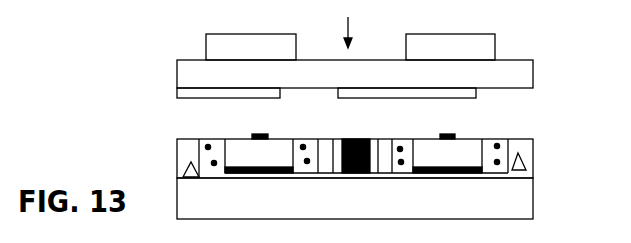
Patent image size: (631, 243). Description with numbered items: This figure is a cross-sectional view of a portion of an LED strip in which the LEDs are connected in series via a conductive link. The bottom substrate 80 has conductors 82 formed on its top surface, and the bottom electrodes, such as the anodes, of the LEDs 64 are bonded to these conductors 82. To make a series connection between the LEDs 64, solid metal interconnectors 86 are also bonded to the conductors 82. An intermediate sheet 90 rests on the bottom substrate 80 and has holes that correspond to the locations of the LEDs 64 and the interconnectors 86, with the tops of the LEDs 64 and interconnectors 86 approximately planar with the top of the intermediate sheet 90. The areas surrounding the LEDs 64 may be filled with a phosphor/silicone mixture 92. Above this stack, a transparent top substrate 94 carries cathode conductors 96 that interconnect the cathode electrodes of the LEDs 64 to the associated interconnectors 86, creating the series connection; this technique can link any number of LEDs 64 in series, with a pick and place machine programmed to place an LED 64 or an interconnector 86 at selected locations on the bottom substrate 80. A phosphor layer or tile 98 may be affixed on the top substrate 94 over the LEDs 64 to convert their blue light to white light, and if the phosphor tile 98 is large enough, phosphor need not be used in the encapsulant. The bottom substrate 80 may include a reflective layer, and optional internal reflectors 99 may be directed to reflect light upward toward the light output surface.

The phosphor layer or tile 98 is at (495, 50).
The transparent top substrate 94 is at (523, 72).
The cathode conductors 96 is at (477, 93).
The intermediate sheet 90 is at (523, 144).
The phosphor/silicone mixture 92 is at (209, 146).
The LED 64 is at (278, 147).
The solid metal interconnector 86 is at (362, 140).
The conductors 82 is at (445, 173).
The internal reflectors 99 is at (522, 163).
The bottom substrate 80 is at (523, 193).